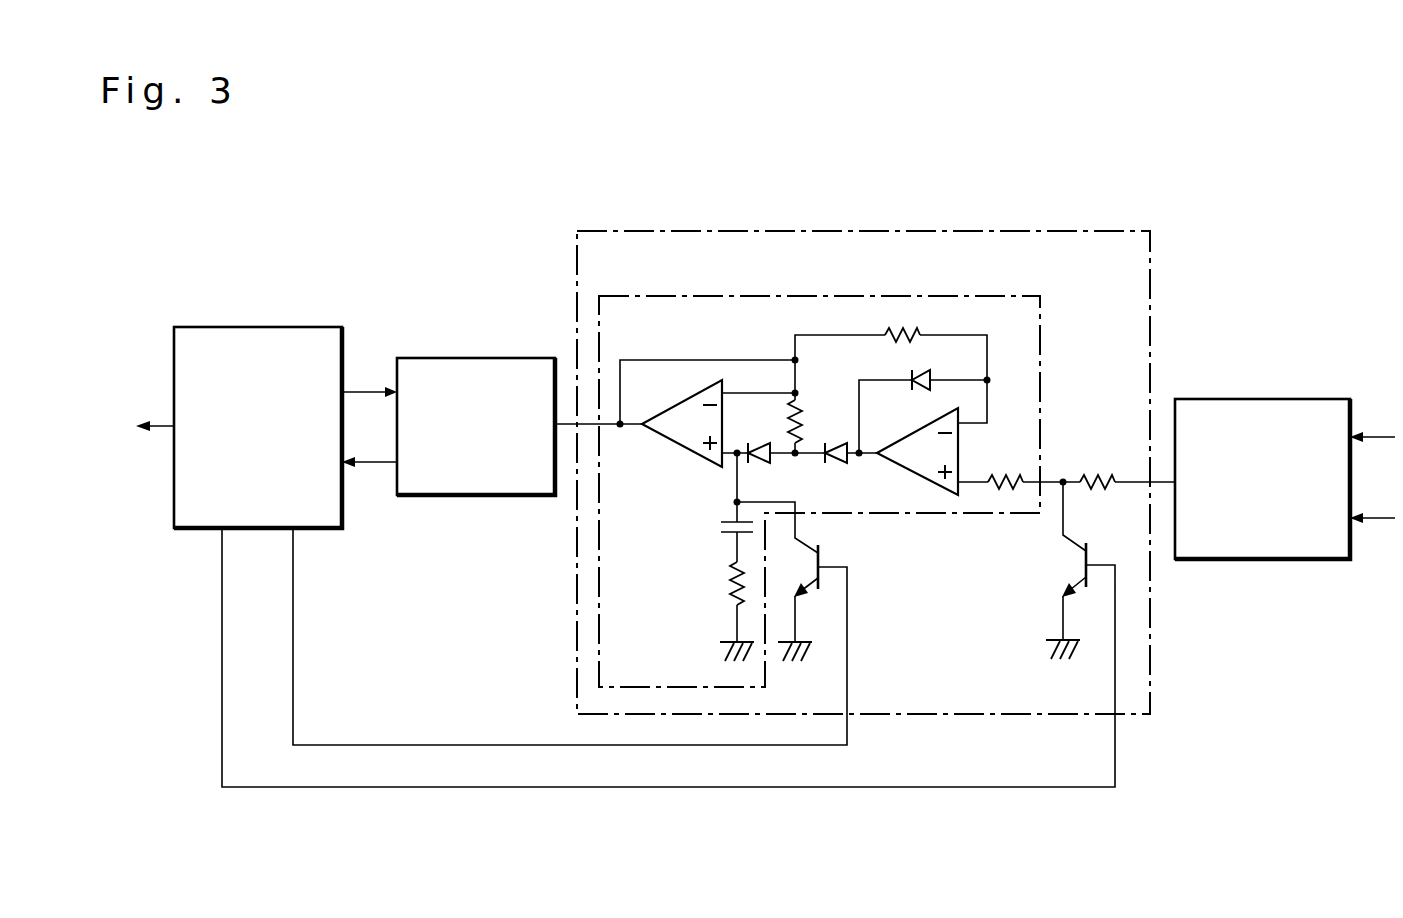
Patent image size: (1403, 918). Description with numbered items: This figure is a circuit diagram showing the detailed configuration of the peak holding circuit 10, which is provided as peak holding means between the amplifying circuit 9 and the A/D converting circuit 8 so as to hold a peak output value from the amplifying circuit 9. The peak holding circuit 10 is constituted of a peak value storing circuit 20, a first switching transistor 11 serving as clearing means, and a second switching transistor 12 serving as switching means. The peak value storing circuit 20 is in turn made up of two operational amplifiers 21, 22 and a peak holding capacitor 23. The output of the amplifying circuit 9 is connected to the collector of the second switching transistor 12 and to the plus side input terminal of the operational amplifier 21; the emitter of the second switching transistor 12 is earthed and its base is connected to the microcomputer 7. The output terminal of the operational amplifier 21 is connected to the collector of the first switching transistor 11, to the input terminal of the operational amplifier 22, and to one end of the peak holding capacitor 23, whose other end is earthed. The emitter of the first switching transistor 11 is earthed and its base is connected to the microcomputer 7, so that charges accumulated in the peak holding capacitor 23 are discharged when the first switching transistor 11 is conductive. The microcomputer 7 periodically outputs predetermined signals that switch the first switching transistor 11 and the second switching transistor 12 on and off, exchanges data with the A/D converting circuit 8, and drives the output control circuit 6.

The output control circuit 6 is at (130, 438).
The microcomputer 7 is at (251, 327).
The A/D converting circuit 8 is at (486, 358).
The amplifying circuit 9 is at (1258, 399).
The peak holding circuit 10 is at (968, 229).
The first switching transistor 11 is at (826, 553).
The second switching transistor 12 is at (1065, 563).
The peak value storing circuit 20 is at (754, 318).
The operational amplifier 21 is at (905, 467).
The operational amplifier 22 is at (672, 446).
The peak holding capacitor 23 is at (716, 532).